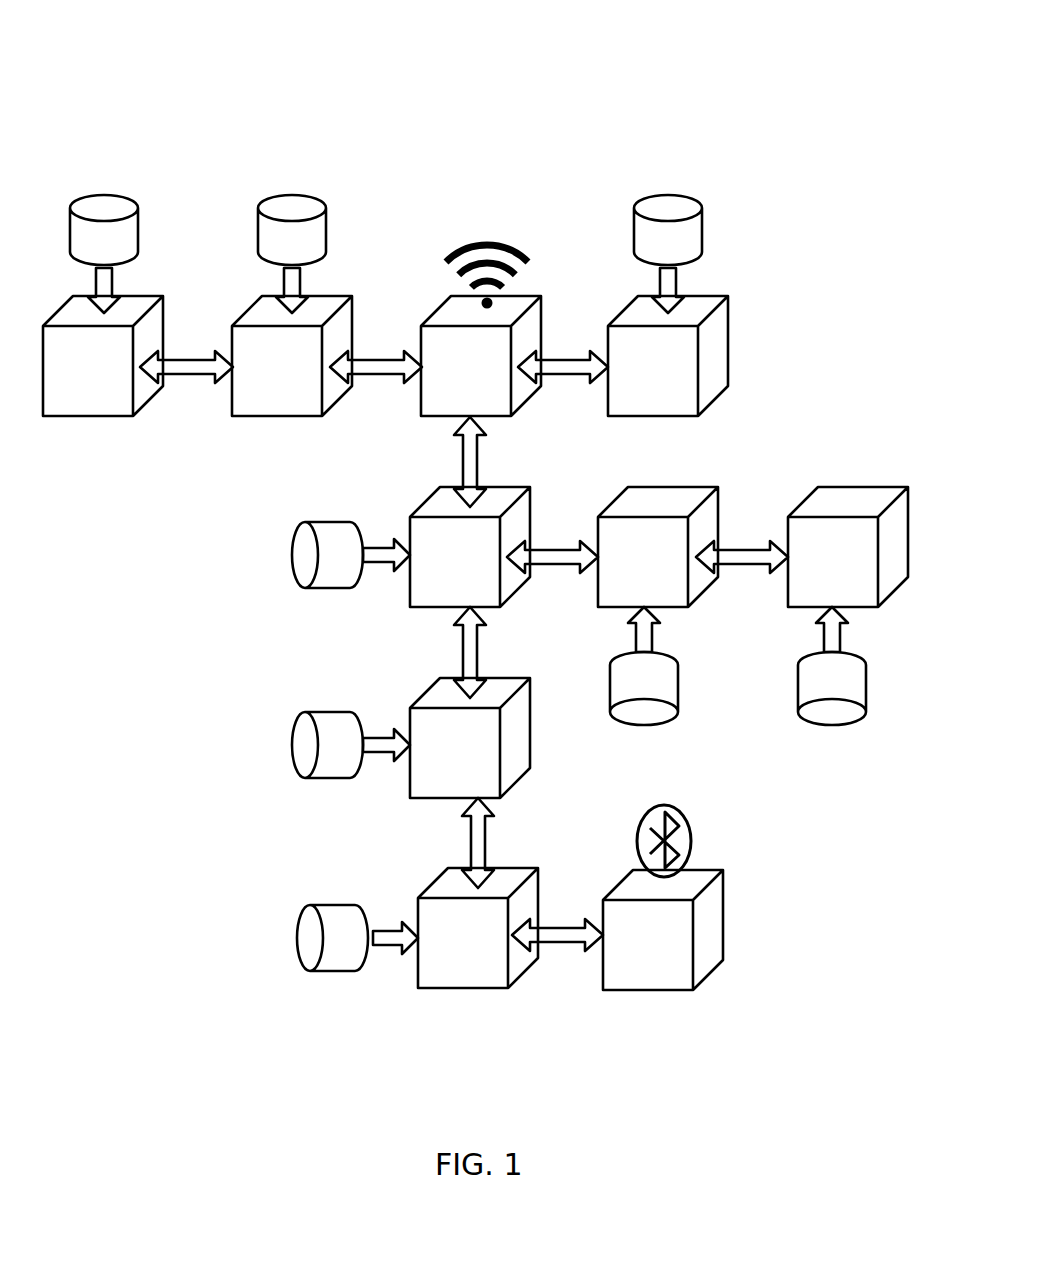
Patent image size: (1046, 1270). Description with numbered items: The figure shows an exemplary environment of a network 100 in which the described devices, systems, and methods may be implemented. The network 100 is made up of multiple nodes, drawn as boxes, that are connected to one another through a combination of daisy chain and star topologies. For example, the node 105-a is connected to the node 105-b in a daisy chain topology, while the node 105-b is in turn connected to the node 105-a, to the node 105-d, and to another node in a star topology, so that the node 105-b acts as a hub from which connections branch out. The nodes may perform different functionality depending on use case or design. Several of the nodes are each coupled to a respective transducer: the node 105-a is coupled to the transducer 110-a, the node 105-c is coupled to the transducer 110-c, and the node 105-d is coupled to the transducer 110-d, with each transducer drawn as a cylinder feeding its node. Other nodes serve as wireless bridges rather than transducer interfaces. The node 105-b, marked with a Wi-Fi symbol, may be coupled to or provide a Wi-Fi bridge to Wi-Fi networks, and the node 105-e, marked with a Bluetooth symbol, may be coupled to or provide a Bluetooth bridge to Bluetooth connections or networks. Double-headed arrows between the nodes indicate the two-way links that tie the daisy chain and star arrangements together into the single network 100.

The network 100 is at (752, 98).
The node 105-a is at (728, 347).
The node 105-b is at (525, 407).
The node 105-c is at (873, 487).
The node 105-d is at (410, 590).
The node 105-e is at (725, 923).
The transducer 110-a is at (700, 228).
The transducer 110-c is at (843, 727).
The transducer 110-d is at (292, 552).